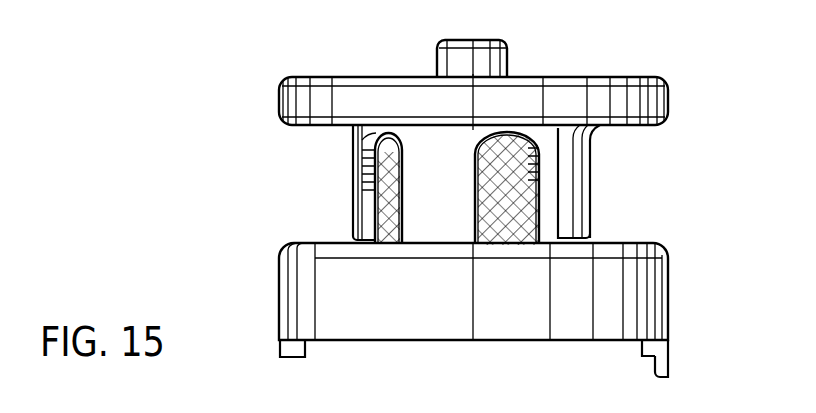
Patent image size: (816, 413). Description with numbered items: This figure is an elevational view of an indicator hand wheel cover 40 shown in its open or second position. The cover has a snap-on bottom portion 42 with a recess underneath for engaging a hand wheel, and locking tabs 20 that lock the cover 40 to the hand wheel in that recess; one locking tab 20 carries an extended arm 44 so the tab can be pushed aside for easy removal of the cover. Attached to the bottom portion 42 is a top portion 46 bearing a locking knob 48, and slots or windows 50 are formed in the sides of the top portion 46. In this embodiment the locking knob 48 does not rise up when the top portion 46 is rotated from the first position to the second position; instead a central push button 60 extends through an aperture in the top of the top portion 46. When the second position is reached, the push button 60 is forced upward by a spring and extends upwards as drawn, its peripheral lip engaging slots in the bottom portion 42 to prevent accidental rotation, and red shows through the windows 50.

The indicator hand wheel cover 40 is at (338, 55).
The bottom portion 42 is at (492, 315).
The extended arm 44 is at (660, 372).
The top portion 46 is at (355, 134).
The locking knob 48 is at (668, 100).
The windows 50 is at (513, 192).
The push button 60 is at (508, 43).
The locking tabs 20 is at (280, 349).